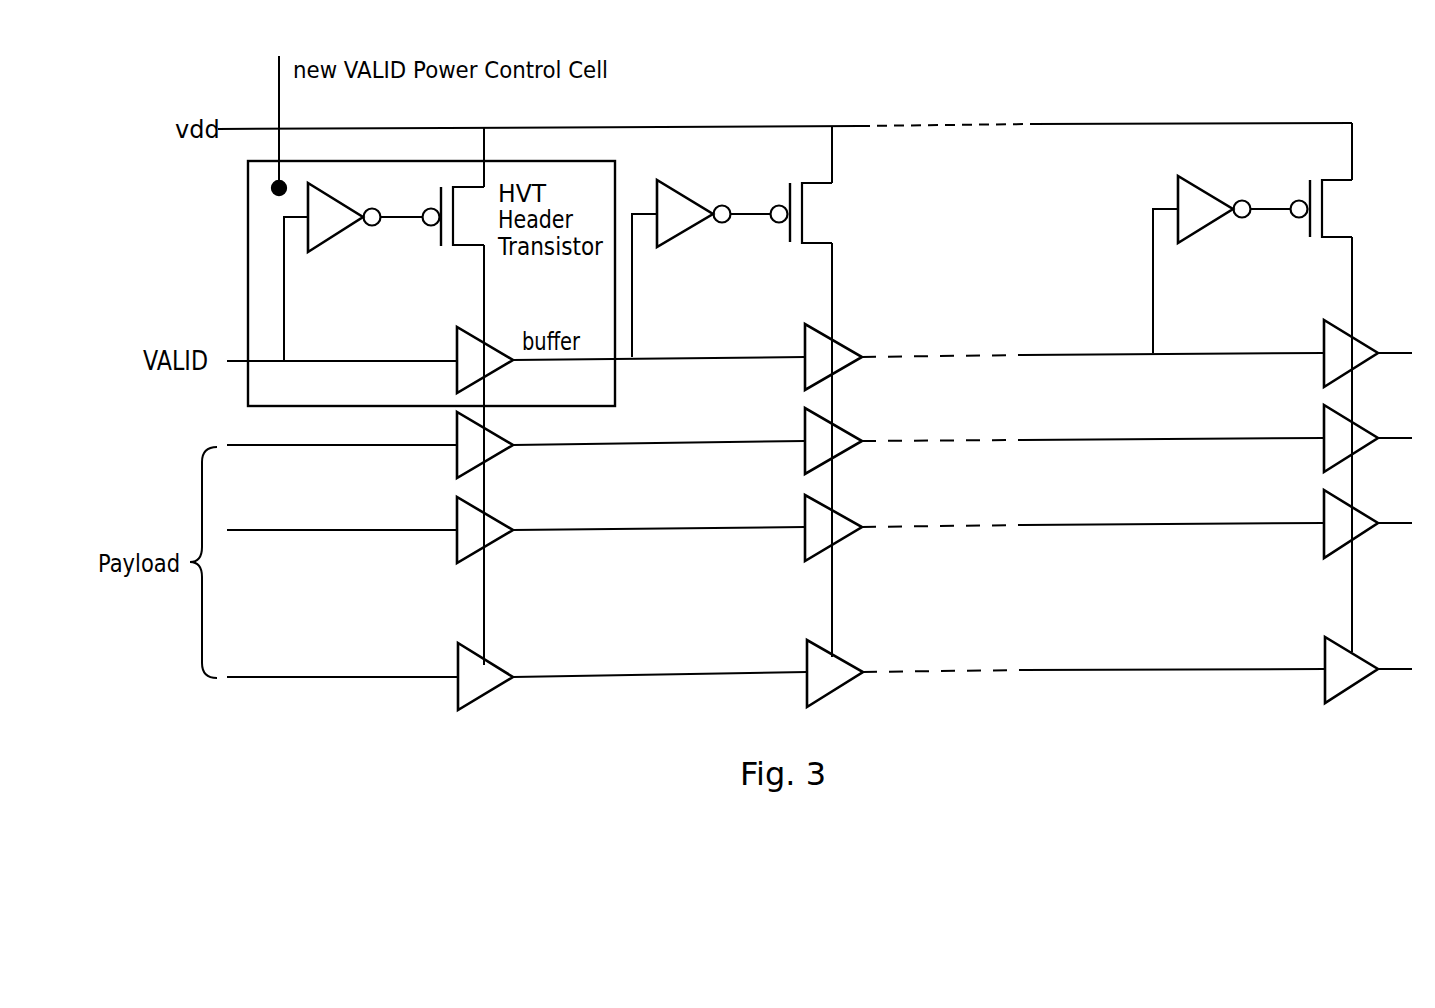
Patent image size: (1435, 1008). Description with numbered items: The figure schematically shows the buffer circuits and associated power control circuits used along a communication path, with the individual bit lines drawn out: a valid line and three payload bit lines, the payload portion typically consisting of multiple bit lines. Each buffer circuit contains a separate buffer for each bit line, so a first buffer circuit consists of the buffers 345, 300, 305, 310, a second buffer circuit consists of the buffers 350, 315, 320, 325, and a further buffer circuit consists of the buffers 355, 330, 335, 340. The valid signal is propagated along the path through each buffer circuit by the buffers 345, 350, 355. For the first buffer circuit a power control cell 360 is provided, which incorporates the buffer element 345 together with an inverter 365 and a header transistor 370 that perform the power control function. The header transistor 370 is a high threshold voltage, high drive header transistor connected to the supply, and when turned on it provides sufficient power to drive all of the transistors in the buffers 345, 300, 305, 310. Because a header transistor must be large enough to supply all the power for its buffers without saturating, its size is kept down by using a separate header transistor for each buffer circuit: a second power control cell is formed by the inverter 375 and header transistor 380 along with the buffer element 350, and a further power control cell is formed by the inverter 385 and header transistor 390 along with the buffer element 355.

The buffer 300 is at (456, 461).
The buffer 305 is at (456, 546).
The buffer 310 is at (458, 691).
The buffer 315 is at (804, 458).
The buffer 320 is at (804, 546).
The buffer 325 is at (806, 689).
The buffer 330 is at (1322, 456).
The buffer 335 is at (1322, 543).
The buffer 340 is at (1324, 686).
The buffer element 345 is at (456, 369).
The buffer element 350 is at (804, 374).
The buffer element 355 is at (1322, 371).
The power control cell 360 is at (244, 258).
The inverter 365 is at (337, 238).
The header transistor 370 is at (467, 247).
The inverter 375 is at (688, 232).
The header transistor 380 is at (817, 246).
The inverter 385 is at (1208, 228).
The header transistor 390 is at (1335, 242).